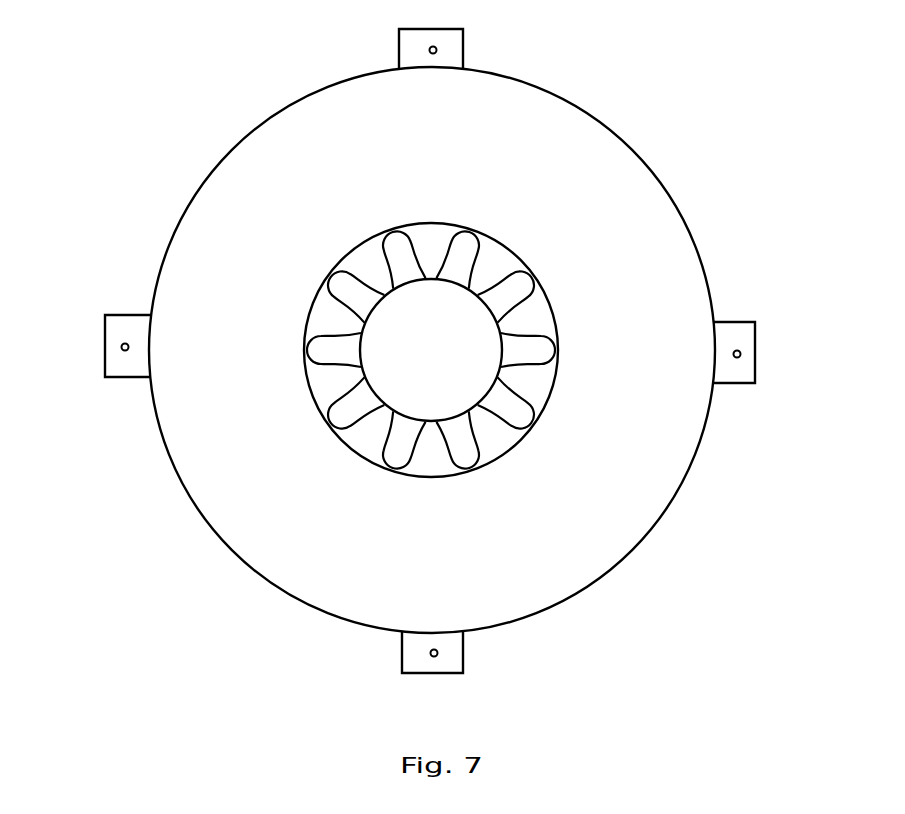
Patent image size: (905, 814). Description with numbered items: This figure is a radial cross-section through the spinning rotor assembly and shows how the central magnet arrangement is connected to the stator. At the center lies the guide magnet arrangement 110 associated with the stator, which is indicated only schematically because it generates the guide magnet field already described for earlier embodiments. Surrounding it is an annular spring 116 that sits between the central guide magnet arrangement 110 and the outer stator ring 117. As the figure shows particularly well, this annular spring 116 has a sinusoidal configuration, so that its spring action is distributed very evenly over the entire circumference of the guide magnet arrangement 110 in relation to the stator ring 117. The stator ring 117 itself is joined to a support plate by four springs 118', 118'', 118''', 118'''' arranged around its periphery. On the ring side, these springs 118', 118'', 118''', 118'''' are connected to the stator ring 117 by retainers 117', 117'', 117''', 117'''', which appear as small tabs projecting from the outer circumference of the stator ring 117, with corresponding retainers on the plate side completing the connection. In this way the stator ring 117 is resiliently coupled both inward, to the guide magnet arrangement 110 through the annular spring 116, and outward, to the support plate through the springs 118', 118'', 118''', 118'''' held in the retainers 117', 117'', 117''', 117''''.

The guide magnet arrangement 110 is at (440, 362).
The annular spring 116 is at (477, 440).
The stator ring 117 is at (442, 350).
The retainer 117' is at (117, 366).
The retainer 117'' is at (470, 656).
The retainer 117''' is at (774, 352).
The retainer 117'''' is at (473, 49).
The spring 118' is at (79, 360).
The spring 118'' is at (396, 678).
The spring 118''' is at (772, 317).
The spring 118'''' is at (481, 31).